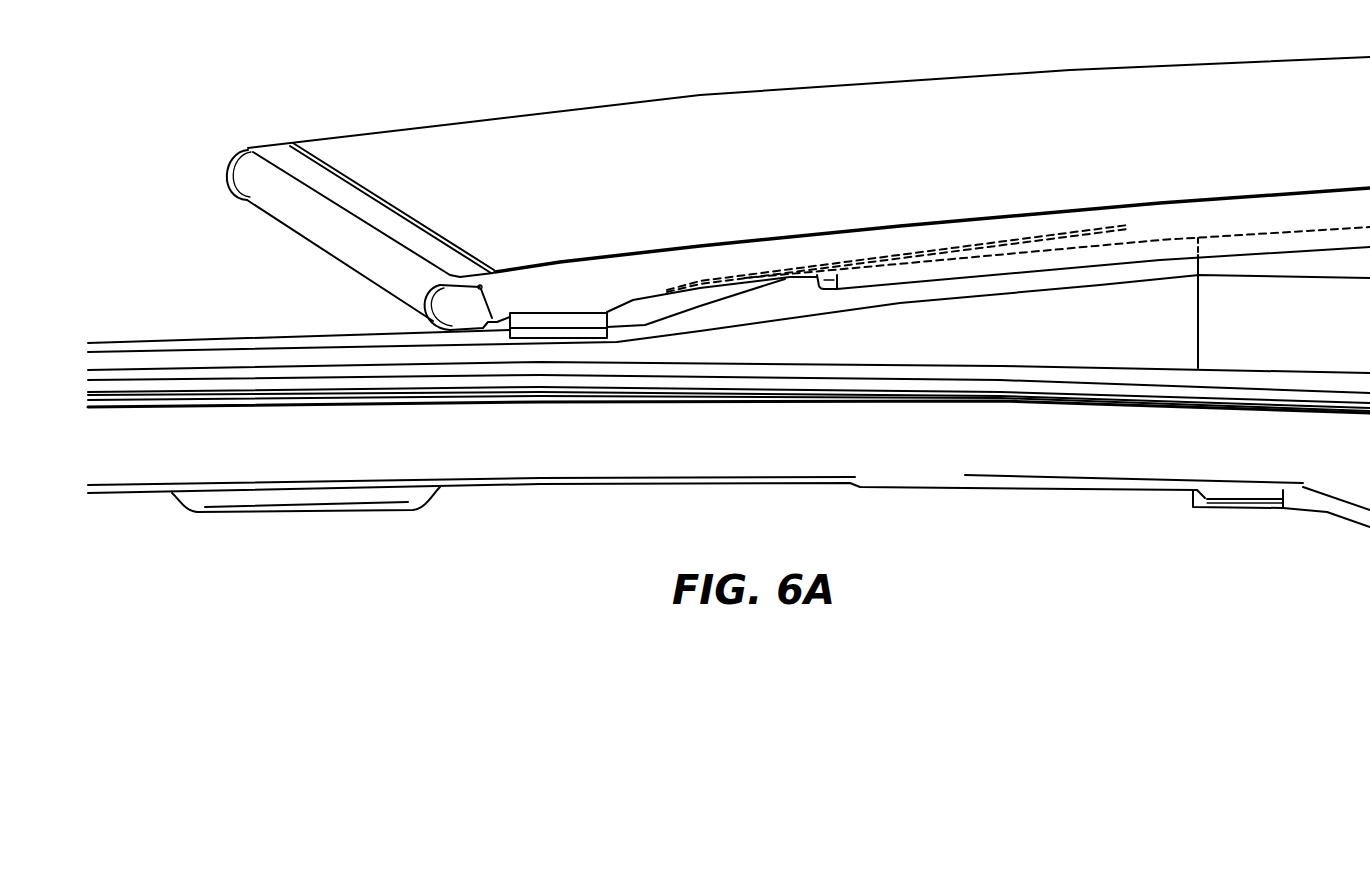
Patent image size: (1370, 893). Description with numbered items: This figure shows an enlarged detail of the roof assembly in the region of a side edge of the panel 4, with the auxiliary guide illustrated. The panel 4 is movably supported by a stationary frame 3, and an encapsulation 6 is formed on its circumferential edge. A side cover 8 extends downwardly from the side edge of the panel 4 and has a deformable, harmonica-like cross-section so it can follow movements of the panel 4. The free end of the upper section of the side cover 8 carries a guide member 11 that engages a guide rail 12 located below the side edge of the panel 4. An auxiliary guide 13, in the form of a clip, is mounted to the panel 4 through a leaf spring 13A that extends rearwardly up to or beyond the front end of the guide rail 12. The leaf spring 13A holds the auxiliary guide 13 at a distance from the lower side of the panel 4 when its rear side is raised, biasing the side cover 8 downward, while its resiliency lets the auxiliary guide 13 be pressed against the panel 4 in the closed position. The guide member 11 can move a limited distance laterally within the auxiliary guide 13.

The frame 3 is at (1103, 448).
The panel 4 is at (816, 126).
The encapsulation 6 is at (300, 167).
The side cover 8 is at (177, 358).
The guide member 11 is at (633, 298).
The guide rail 12 is at (837, 275).
The auxiliary guide 13 is at (558, 323).
The leaf spring 13A is at (1013, 153).